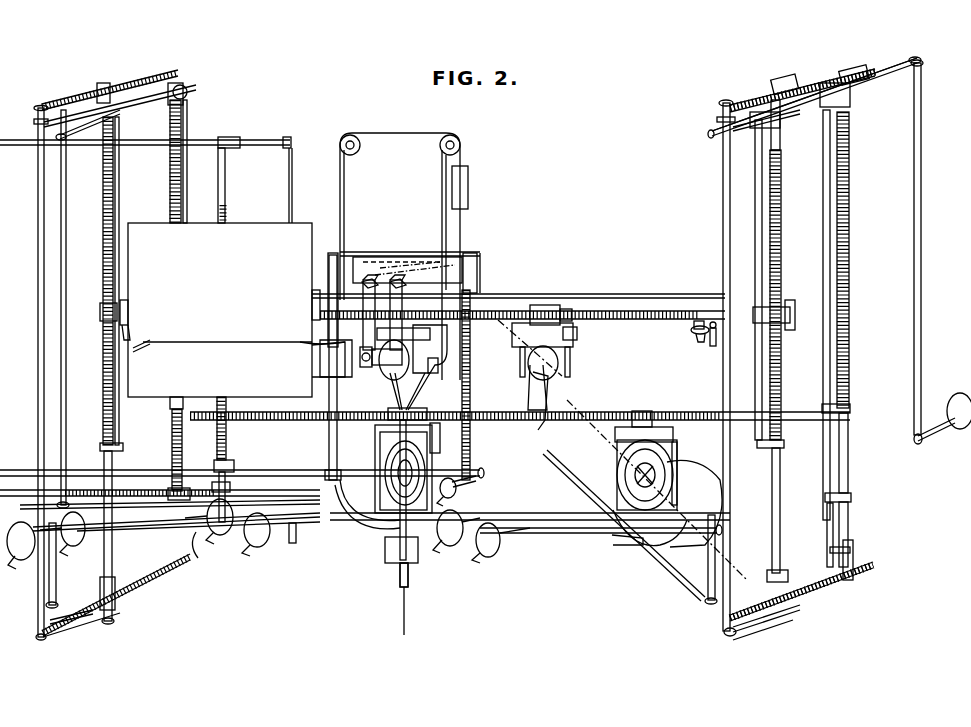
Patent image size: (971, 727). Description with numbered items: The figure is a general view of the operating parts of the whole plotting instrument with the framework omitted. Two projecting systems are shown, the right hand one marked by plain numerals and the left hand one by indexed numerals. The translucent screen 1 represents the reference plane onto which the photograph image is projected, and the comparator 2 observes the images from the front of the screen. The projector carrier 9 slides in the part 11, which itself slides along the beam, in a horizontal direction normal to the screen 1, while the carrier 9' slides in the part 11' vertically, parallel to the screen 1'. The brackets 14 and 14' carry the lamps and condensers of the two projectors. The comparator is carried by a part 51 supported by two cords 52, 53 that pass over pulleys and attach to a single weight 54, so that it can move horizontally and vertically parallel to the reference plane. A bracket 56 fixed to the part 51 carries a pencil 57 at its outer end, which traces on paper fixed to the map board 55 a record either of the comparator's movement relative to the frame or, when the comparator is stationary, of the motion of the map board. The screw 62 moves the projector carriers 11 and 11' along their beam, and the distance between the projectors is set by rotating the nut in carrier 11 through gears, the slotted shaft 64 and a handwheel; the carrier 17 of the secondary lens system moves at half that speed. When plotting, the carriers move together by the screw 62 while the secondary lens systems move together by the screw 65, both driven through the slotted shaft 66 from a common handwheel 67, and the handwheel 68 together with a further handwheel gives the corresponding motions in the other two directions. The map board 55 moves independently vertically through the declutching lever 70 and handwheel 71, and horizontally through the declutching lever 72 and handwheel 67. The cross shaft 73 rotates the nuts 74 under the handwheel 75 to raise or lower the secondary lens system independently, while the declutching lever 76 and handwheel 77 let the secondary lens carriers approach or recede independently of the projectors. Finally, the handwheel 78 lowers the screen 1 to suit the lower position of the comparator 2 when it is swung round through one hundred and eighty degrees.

The translucent screen 1 is at (404, 287).
The screen 1' is at (401, 249).
The comparator 2 is at (390, 369).
The carrier 9 is at (660, 471).
The carrier 9' is at (442, 473).
The projector carrier 11 is at (626, 434).
The projector carrier 11' is at (470, 437).
The bracket 14 is at (624, 525).
The bracket 14' is at (377, 574).
The carrier of the secondary lens system 17 is at (575, 338).
The part 51 is at (430, 363).
The cord 52 is at (442, 167).
The cord 53 is at (341, 191).
The weight 54 is at (469, 174).
The map board 55 is at (258, 234).
The bracket 56 is at (305, 350).
The pencil 57 is at (145, 347).
The screw 62 is at (683, 411).
The slotted shaft 64 is at (878, 73).
The screw 65 is at (590, 296).
The slotted shaft 66 is at (152, 105).
The handwheel 67 is at (218, 539).
The handwheel 68 is at (74, 549).
The declutching lever 70 is at (295, 541).
The handwheel 71 is at (262, 548).
The declutching lever 72 is at (201, 561).
The cross shaft 73 is at (544, 294).
The nuts 74 is at (101, 313).
The handwheel 75 is at (121, 334).
The declutching lever 76 is at (712, 347).
The handwheel 77 is at (693, 334).
The handwheel 78 is at (458, 494).